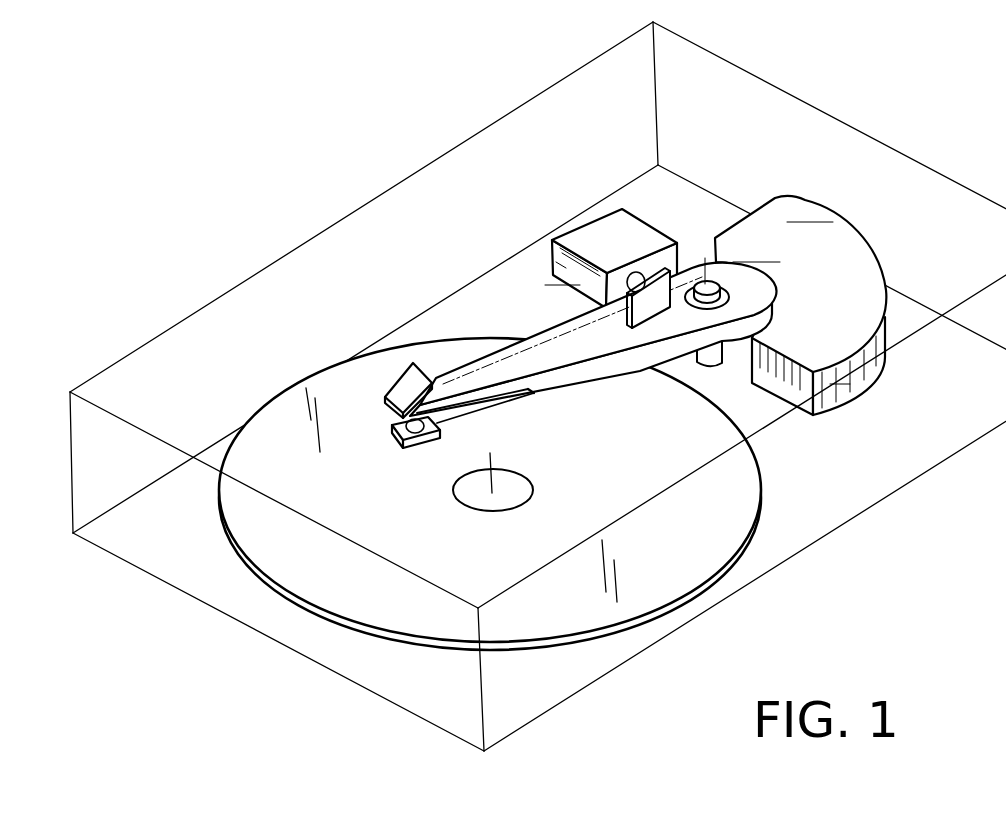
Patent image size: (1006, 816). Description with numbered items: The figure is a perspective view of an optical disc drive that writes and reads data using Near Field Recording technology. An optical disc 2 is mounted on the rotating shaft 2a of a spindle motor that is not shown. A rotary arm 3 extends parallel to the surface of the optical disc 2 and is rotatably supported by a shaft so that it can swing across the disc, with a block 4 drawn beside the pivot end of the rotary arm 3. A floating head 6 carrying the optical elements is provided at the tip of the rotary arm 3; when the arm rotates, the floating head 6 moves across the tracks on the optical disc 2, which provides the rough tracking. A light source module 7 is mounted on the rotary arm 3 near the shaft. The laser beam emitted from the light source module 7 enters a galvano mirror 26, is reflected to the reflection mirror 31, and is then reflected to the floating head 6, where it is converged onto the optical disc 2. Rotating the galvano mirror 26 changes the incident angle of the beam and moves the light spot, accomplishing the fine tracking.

The optical disc 2 is at (742, 500).
The rotating shaft 2a is at (530, 478).
The rotary arm 3 is at (544, 323).
The voice coil motor magnet 4 is at (851, 248).
The floating head 6 is at (393, 432).
The light source module 7 is at (588, 238).
The galvano mirror 26 is at (644, 326).
The reflection mirror 31 is at (410, 378).